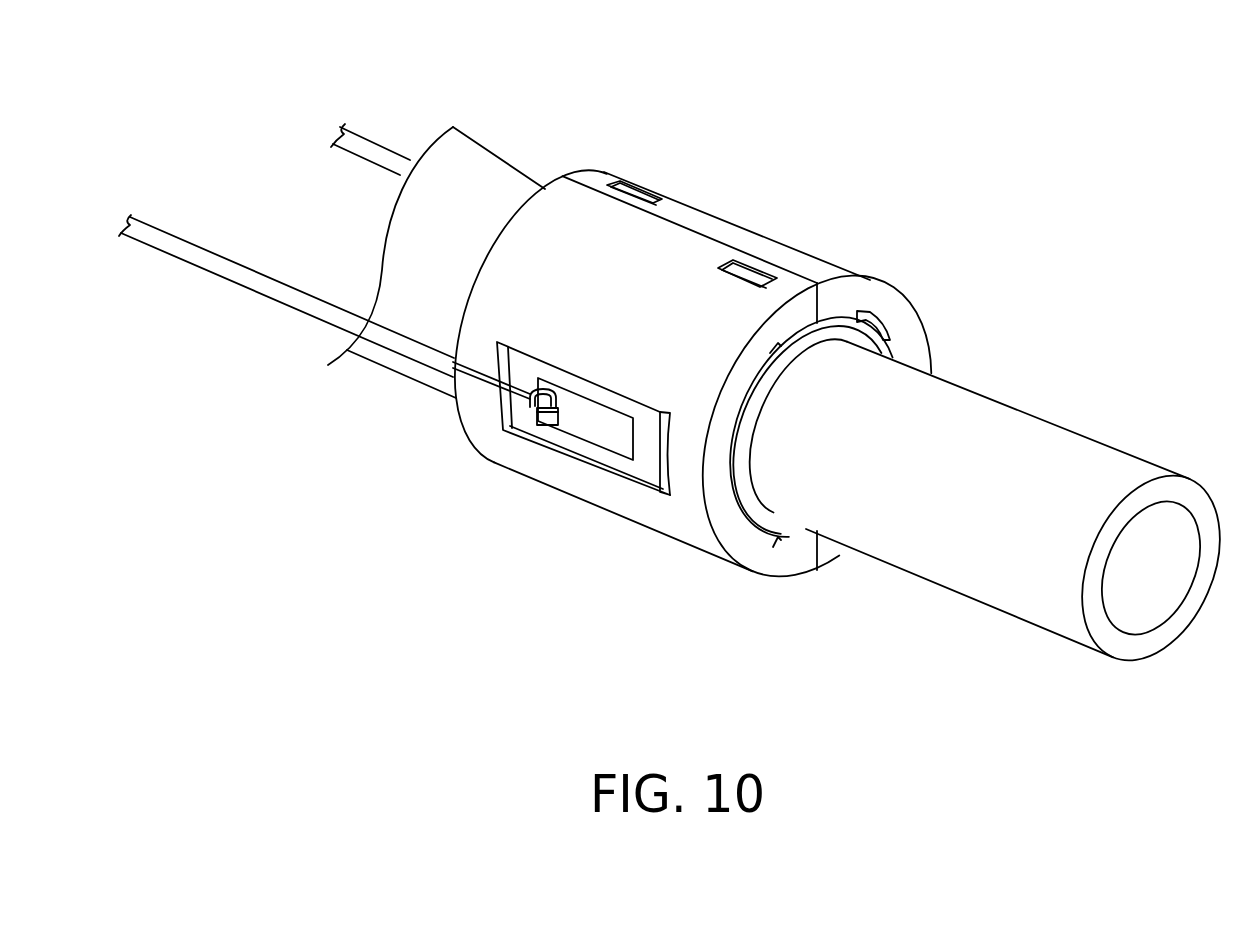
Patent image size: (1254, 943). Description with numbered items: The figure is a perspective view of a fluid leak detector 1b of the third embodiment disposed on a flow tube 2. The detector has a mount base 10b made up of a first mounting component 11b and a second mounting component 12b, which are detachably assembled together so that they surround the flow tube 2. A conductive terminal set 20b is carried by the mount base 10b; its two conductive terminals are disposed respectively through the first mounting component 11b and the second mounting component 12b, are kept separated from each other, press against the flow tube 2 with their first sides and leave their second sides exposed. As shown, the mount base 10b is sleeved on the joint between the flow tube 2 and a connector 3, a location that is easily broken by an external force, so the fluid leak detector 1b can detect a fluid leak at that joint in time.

The fluid leak detector 1b is at (866, 244).
The mount base 10b is at (831, 124).
The first mounting component 11b is at (788, 318).
The second mounting component 12b is at (832, 300).
The flow tube 2 is at (857, 330).
The connector 3 is at (1043, 605).
The conductive terminal set 20b is at (548, 437).